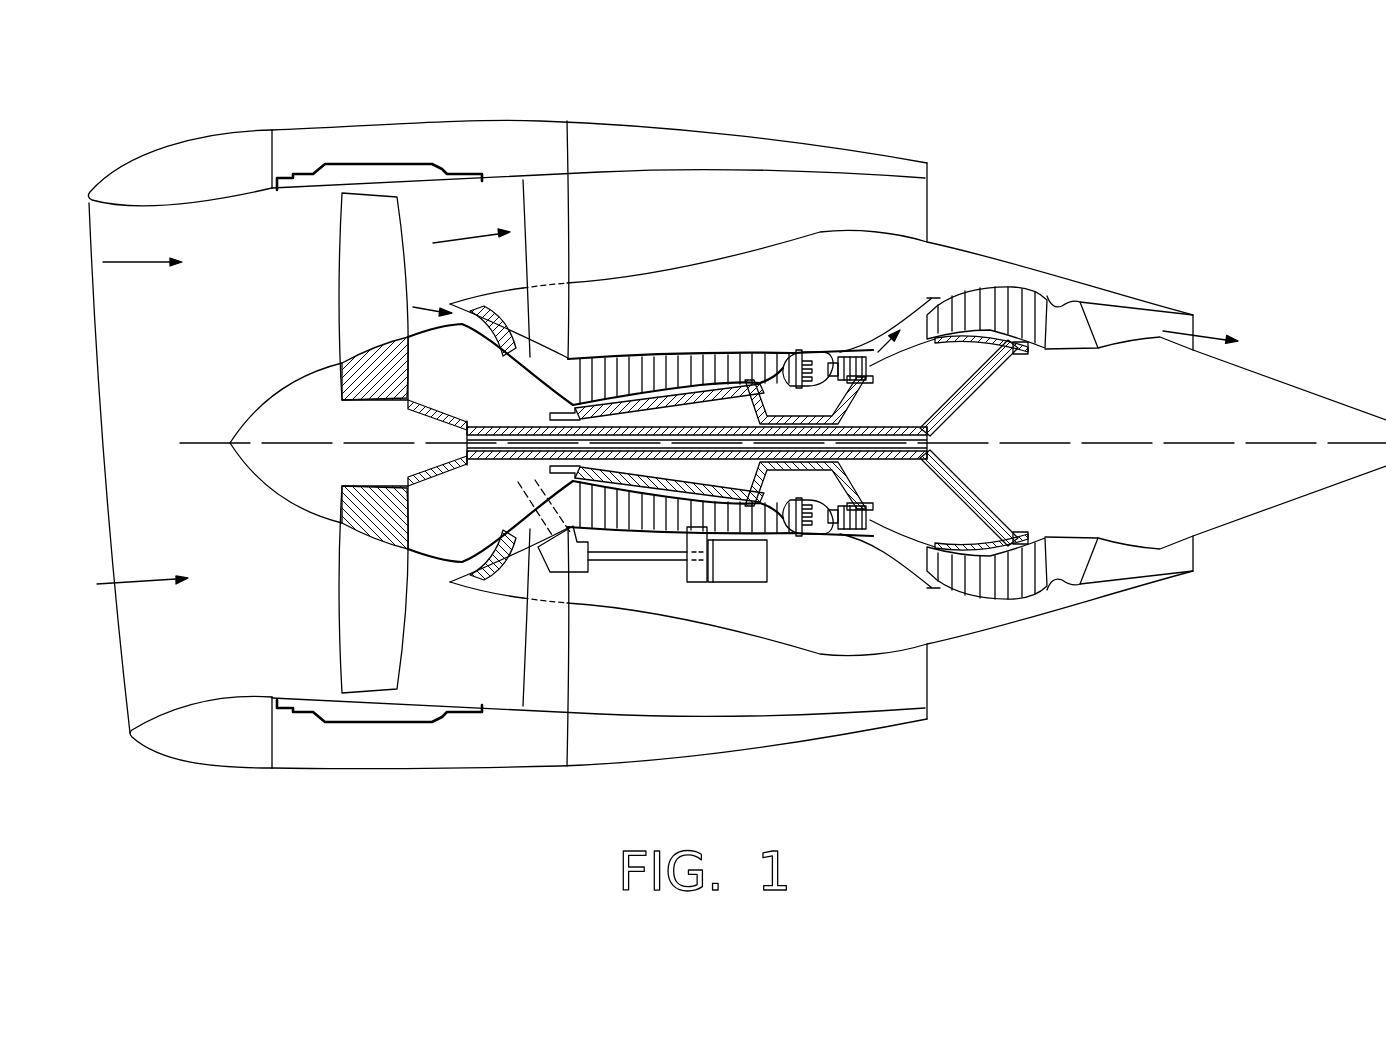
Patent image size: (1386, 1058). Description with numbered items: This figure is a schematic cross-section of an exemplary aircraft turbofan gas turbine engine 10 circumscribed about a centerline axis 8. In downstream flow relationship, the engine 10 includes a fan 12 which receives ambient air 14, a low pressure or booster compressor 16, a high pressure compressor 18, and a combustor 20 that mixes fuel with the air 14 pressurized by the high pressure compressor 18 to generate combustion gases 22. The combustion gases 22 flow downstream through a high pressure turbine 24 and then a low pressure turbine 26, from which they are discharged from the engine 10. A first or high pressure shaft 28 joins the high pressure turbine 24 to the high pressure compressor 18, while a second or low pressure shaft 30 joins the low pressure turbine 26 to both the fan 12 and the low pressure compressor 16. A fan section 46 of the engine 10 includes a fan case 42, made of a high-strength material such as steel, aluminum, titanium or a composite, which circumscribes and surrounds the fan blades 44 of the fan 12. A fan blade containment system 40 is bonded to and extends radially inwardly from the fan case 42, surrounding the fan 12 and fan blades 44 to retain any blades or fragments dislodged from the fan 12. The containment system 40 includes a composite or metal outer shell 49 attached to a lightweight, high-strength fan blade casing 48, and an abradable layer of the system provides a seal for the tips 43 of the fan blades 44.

The centerline axis 8 is at (1083, 440).
The turbofan gas turbine engine 10 is at (1002, 174).
The fan 12 is at (325, 347).
The ambient air 14 is at (128, 263).
The low pressure or booster compressor 16 is at (519, 347).
The high pressure compressor 18 is at (594, 356).
The combustor 20 is at (806, 356).
The combustion gases 22 is at (886, 354).
The high pressure turbine 24 is at (855, 354).
The low pressure turbine 26 is at (1002, 290).
The high pressure shaft 28 is at (828, 470).
The low pressure shaft 30 is at (898, 462).
The fan blade containment system 40 is at (382, 168).
The fan case 42 is at (494, 178).
The tips 43 is at (367, 690).
The fan blades 44 is at (340, 236).
The fan section 46 is at (289, 789).
The fan blade casing 48 is at (466, 703).
The outer shell 49 is at (507, 720).